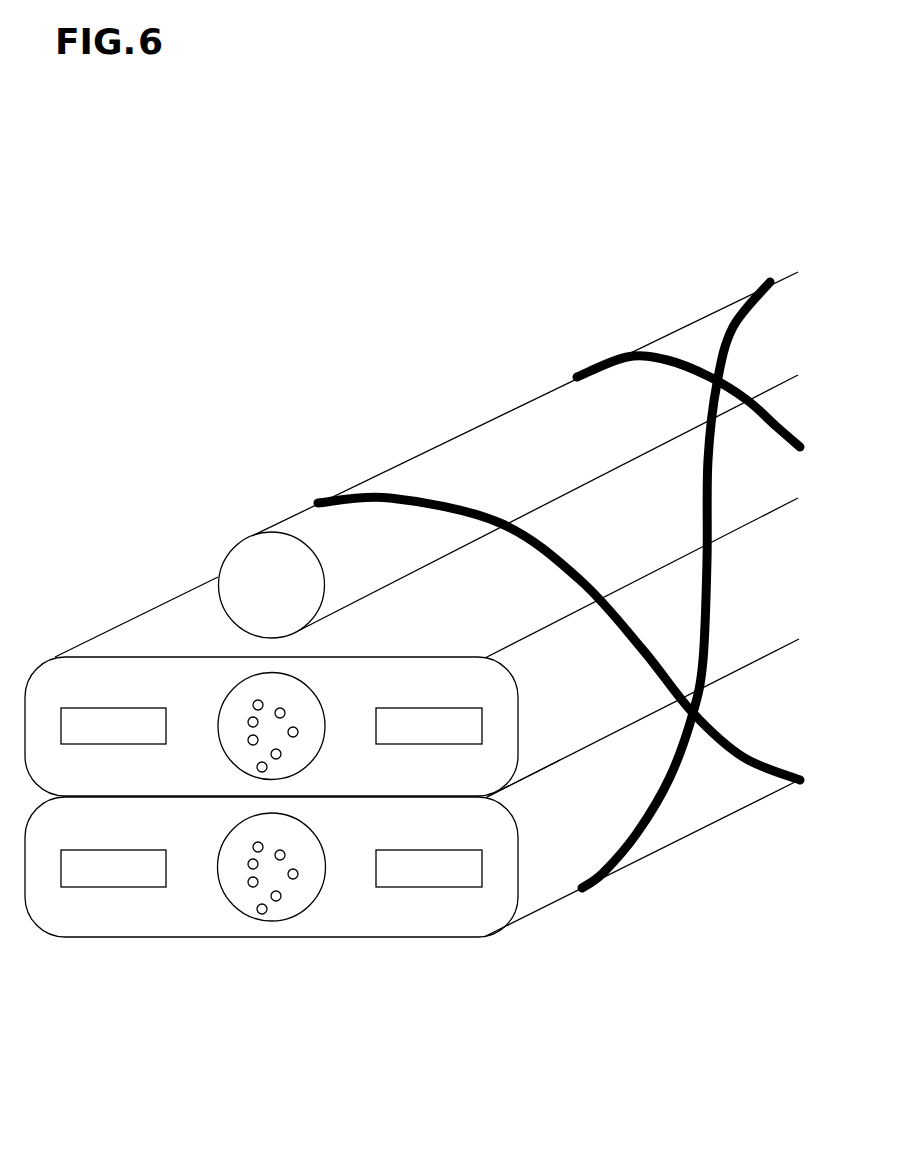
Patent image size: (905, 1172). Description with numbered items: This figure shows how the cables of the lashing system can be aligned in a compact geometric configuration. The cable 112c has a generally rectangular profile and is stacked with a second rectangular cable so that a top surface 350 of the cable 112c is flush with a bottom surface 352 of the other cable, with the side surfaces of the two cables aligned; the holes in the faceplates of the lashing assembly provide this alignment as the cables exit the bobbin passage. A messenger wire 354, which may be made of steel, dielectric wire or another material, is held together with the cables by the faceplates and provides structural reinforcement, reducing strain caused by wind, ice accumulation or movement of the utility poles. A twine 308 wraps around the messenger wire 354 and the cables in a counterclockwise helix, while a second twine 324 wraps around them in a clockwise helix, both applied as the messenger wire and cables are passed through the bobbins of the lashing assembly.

The cable 112c is at (167, 623).
The twine 308 is at (392, 498).
The twine 324 is at (715, 490).
The messenger wire 354 is at (518, 445).
The bottom surface 352 is at (773, 644).
The top surface 350 is at (545, 780).